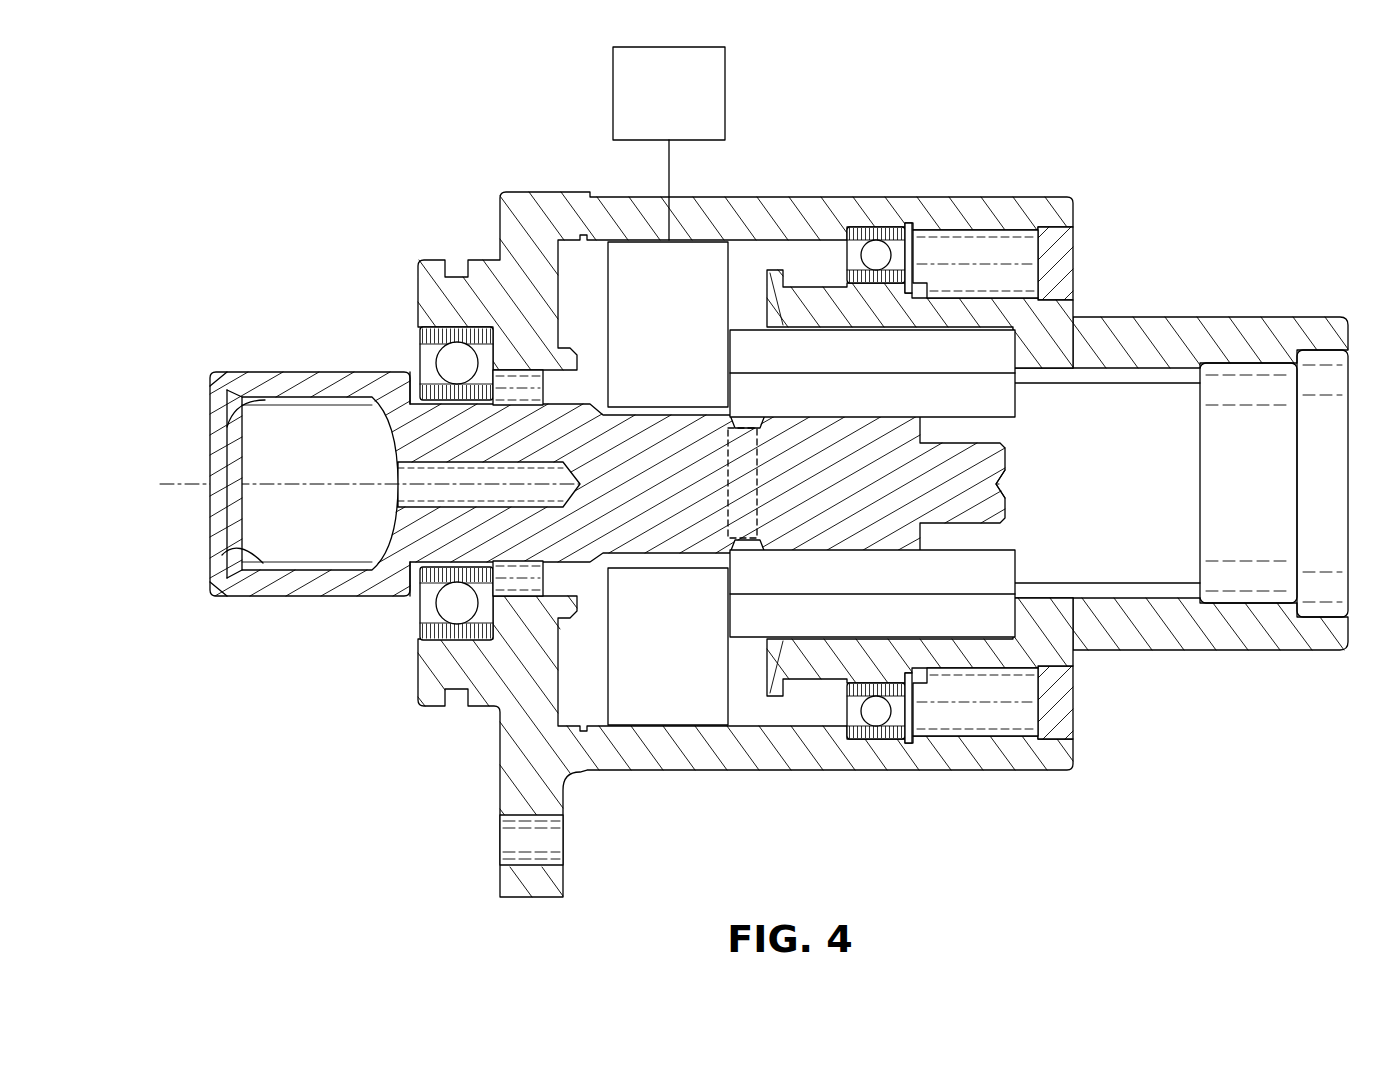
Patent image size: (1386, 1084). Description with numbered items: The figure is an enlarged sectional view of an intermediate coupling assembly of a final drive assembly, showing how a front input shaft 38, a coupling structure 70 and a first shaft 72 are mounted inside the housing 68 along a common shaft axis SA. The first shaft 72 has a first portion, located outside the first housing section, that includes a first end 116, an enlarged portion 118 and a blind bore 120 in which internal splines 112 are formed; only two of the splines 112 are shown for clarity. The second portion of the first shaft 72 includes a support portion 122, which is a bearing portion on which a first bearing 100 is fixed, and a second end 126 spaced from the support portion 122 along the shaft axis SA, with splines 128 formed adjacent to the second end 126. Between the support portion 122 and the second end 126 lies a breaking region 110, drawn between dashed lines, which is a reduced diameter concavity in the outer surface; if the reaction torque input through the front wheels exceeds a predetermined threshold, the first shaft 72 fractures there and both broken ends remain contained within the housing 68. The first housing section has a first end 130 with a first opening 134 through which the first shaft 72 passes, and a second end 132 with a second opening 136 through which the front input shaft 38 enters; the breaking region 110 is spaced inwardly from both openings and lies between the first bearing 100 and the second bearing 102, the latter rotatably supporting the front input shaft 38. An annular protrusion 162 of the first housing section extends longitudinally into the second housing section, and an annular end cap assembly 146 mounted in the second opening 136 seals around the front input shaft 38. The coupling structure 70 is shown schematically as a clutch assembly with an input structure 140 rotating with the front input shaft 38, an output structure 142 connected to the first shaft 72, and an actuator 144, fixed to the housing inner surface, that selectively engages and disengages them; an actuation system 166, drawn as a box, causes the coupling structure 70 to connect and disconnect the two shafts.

The front input shaft 38 is at (1230, 317).
The housing 68 is at (490, 785).
The coupling structure 70 is at (1020, 570).
The first shaft 72 is at (608, 488).
The first bearing 100 is at (418, 333).
The second bearing 102 is at (877, 741).
The breaking region 110 is at (737, 455).
The splines 112 is at (227, 427).
The first end 116 is at (208, 588).
The enlarged portion 118 is at (262, 598).
The blind bore 120 is at (253, 472).
The support portion 122 is at (443, 427).
The second end 126 is at (1010, 500).
The splines 128 is at (837, 550).
The first end 130 is at (418, 703).
The second end 132 is at (748, 534).
The first opening 134 is at (420, 642).
The second opening 136 is at (1073, 740).
The input structure 140 is at (762, 622).
The output structure 142 is at (912, 582).
The actuator 144 is at (685, 703).
The end cap assembly 146 is at (1075, 283).
The annular protrusion 162 is at (437, 260).
The actuation system 166 is at (725, 90).
The shaft axis SA is at (185, 488).